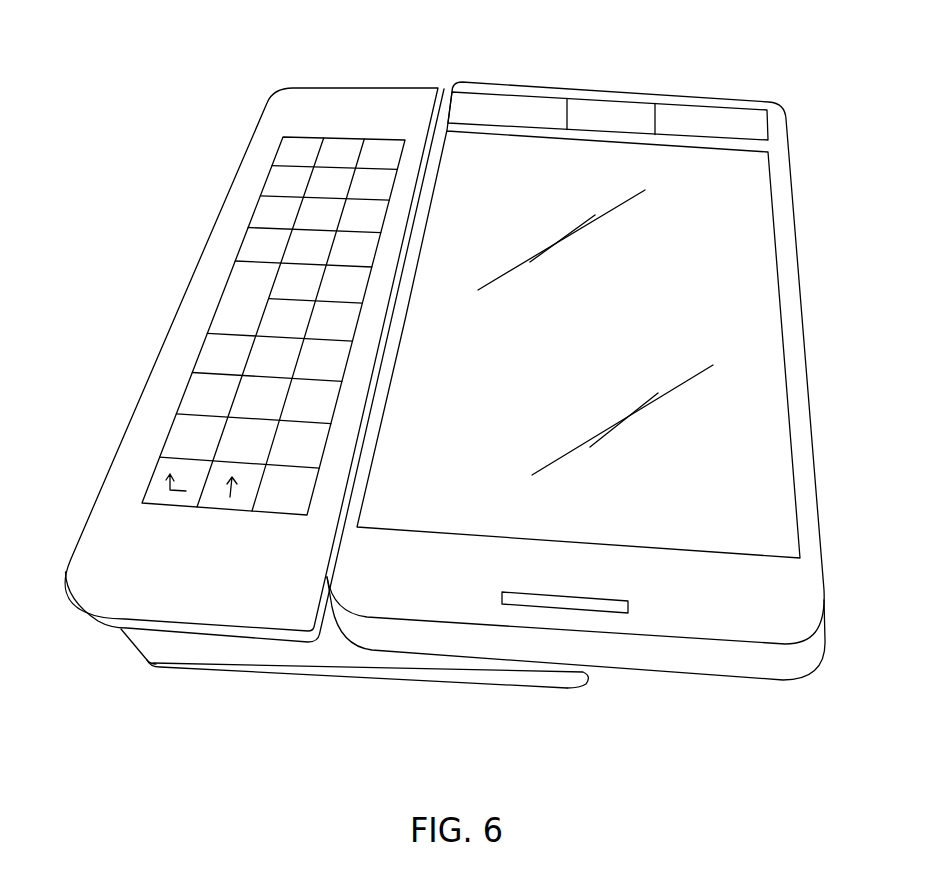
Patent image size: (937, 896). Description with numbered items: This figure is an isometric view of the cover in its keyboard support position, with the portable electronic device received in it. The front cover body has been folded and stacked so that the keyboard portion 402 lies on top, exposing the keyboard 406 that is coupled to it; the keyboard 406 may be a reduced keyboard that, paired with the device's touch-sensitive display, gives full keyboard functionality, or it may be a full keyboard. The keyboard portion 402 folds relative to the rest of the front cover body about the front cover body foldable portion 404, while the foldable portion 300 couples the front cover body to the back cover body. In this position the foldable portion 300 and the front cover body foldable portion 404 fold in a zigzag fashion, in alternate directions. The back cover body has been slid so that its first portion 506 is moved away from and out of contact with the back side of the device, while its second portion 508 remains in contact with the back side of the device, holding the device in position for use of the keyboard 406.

The foldable portion 300 is at (128, 648).
The keyboard portion 402 is at (362, 112).
The front cover body foldable portion 404 is at (313, 637).
The keyboard 406 is at (288, 170).
The first portion 506 is at (213, 650).
The second portion 508 is at (490, 668).